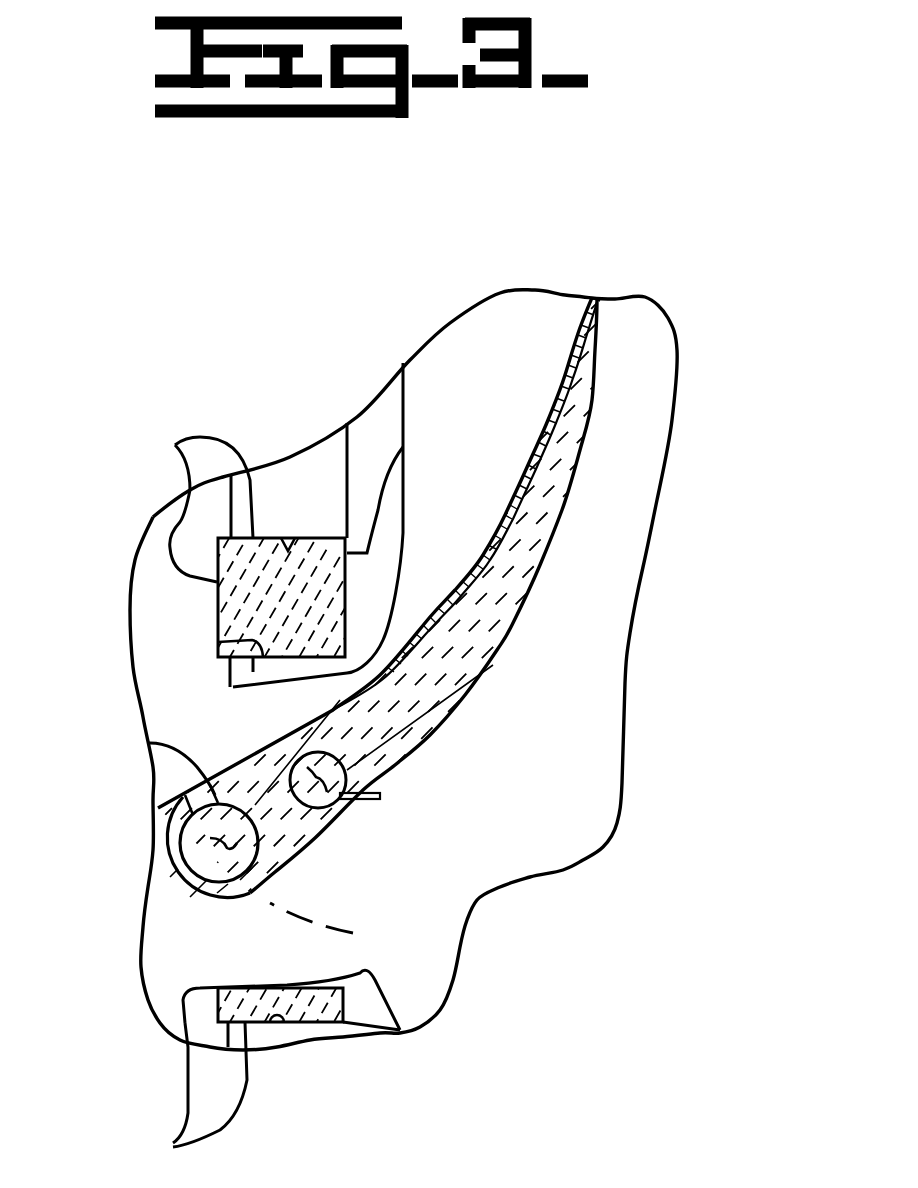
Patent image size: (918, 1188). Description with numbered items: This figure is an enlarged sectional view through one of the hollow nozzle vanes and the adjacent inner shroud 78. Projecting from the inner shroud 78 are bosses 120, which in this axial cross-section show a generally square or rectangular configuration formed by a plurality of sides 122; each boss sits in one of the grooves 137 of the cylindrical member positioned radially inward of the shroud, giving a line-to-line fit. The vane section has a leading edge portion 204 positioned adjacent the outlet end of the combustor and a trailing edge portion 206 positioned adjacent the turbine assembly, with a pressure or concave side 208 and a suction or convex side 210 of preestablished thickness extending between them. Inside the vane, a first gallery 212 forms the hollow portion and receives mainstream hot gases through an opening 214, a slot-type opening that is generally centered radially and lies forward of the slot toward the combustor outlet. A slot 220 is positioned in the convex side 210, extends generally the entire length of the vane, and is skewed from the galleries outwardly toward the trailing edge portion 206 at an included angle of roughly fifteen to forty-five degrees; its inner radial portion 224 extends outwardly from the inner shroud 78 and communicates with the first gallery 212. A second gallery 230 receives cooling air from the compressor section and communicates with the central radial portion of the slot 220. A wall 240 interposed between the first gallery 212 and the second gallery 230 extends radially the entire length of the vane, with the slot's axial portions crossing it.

The inner shroud 78 is at (560, 810).
The trailing edge portion 206 is at (592, 300).
The bosses 120 is at (270, 598).
The sides 122 is at (175, 445).
The grooves 137 is at (290, 545).
The leading edge portion 204 is at (182, 848).
The pressure or concave side 208 is at (148, 746).
The suction or convex side 210 is at (502, 647).
The first gallery 212 is at (225, 845).
The opening 214 is at (210, 813).
The slot 220 is at (378, 797).
The inner radial portion 224 is at (350, 932).
The second gallery 230 is at (347, 757).
The wall 240 is at (278, 812).